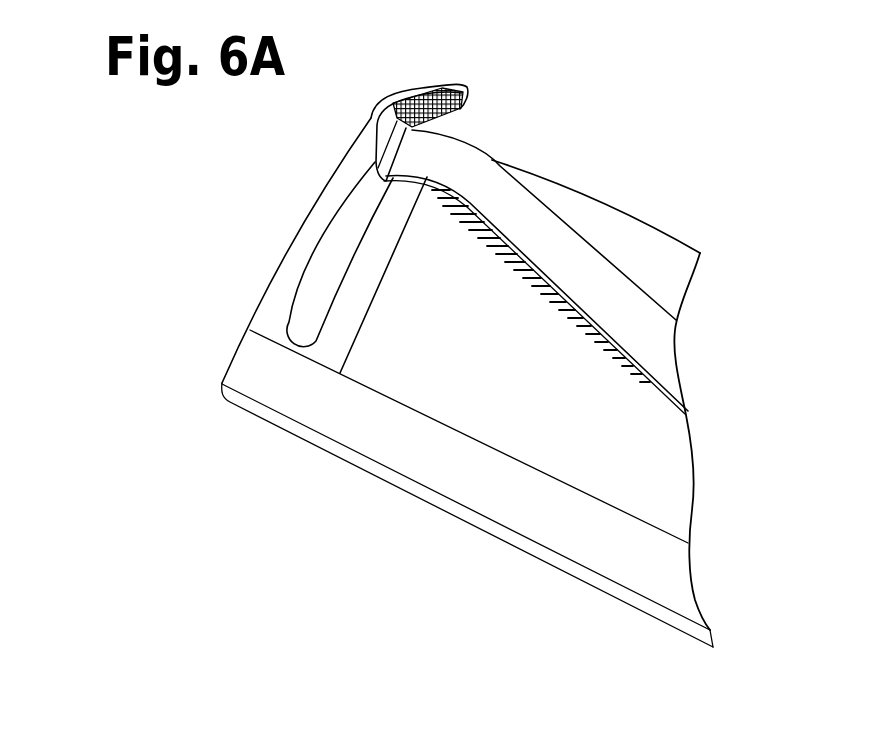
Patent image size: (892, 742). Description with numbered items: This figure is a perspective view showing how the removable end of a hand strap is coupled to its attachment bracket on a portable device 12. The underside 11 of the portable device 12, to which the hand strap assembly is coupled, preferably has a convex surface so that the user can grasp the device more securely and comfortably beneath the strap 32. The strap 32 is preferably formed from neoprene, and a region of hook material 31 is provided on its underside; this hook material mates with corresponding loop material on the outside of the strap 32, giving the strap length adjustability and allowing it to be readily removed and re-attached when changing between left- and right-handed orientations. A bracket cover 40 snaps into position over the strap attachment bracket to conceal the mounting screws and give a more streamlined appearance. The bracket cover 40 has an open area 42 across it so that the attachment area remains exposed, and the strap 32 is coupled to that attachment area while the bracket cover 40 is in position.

The underside 11 is at (447, 393).
The portable device 12 is at (636, 215).
The region of hook material 31 is at (466, 112).
The strap 32 is at (470, 171).
The bracket cover 40 is at (299, 219).
The open area 42 is at (312, 310).